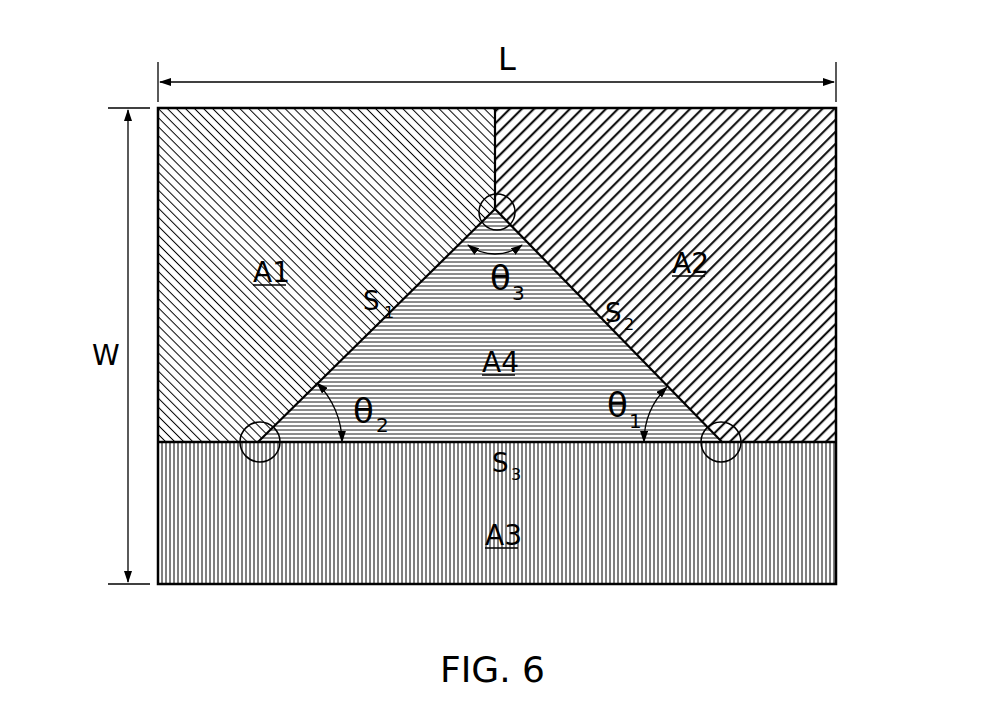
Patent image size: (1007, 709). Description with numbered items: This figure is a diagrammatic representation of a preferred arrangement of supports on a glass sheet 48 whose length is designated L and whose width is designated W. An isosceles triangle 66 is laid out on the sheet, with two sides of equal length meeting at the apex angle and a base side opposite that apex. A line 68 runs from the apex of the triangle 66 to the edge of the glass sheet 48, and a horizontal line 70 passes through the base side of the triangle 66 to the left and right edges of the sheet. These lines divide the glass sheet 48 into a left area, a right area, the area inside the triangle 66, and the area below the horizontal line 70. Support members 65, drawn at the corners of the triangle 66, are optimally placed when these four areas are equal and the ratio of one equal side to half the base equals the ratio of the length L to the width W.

The glass sheet 48 is at (836, 234).
The support members 65 is at (514, 207).
The triangle 66 is at (650, 349).
The line 68 is at (497, 153).
The horizontal line 70 is at (193, 443).